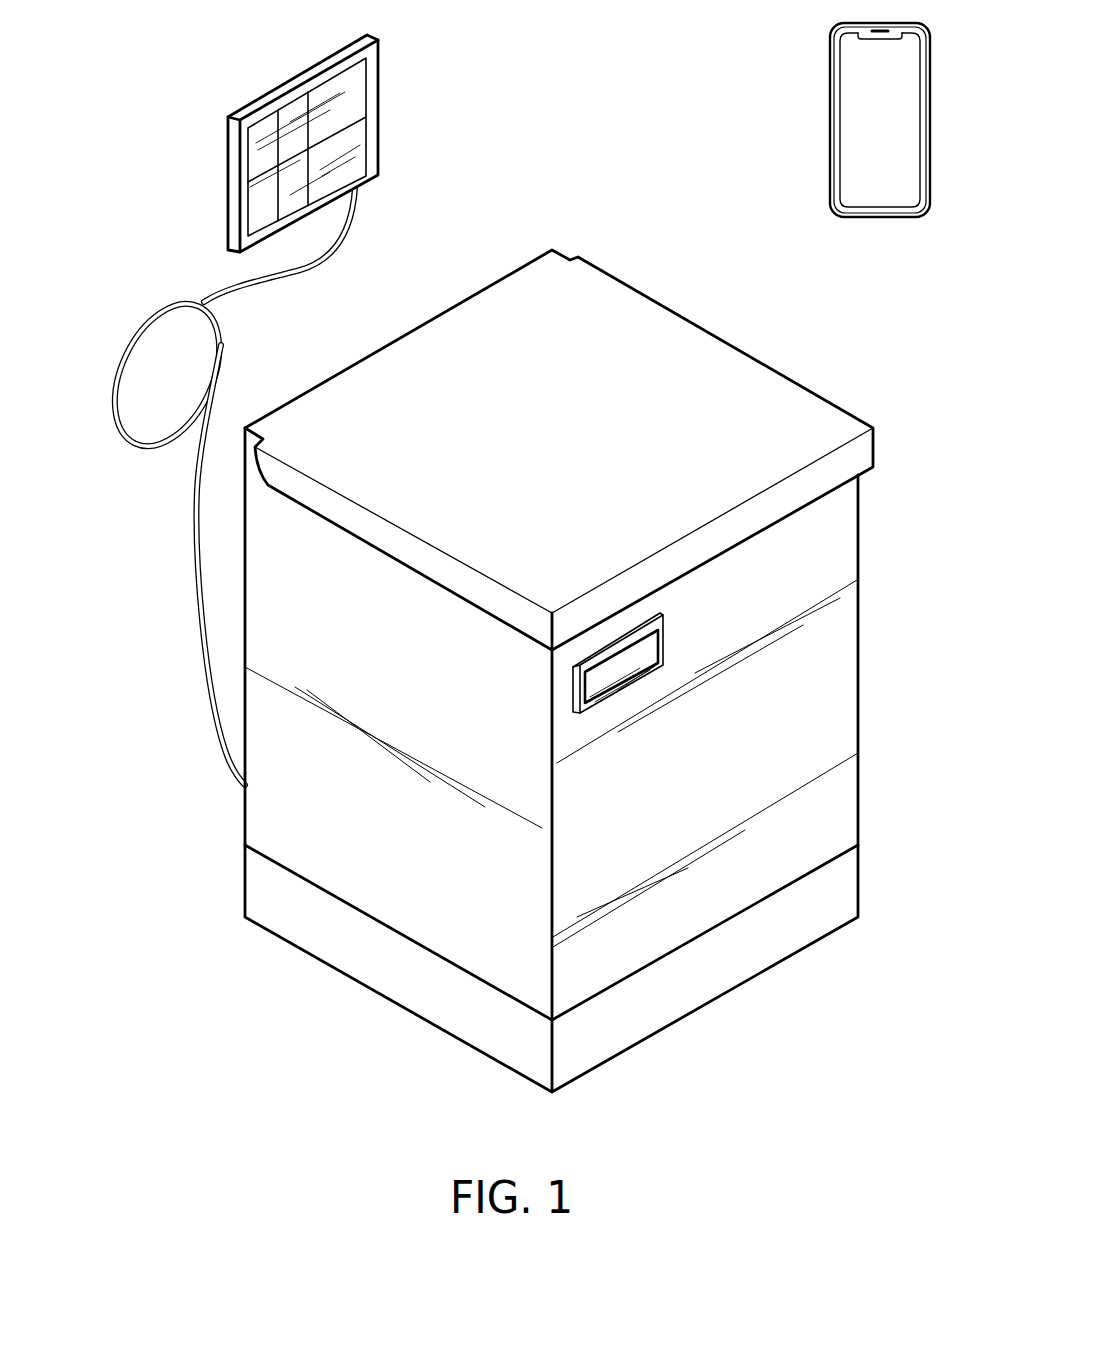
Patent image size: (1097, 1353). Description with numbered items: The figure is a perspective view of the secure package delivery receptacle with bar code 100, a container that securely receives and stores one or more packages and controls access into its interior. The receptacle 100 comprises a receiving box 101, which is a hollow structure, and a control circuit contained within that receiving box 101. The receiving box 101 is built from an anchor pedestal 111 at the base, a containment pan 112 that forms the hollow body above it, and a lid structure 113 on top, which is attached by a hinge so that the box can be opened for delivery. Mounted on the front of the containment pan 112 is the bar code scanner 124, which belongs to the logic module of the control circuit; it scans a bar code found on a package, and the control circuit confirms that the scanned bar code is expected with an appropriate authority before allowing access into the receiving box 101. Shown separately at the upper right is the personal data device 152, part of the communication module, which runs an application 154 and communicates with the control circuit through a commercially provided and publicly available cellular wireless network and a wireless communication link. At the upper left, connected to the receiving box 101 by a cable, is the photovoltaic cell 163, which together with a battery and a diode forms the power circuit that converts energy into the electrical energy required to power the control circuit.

The secure package delivery receptacle with bar code 100 is at (147, 136).
The receiving box 101 is at (340, 1022).
The anchor pedestal 111 is at (860, 885).
The containment pan 112 is at (808, 697).
The lid structure 113 is at (822, 422).
The bar code scanner 124 is at (660, 647).
The personal data device 152 is at (832, 68).
The application 154 is at (848, 113).
The photovoltaic cell 163 is at (353, 98).